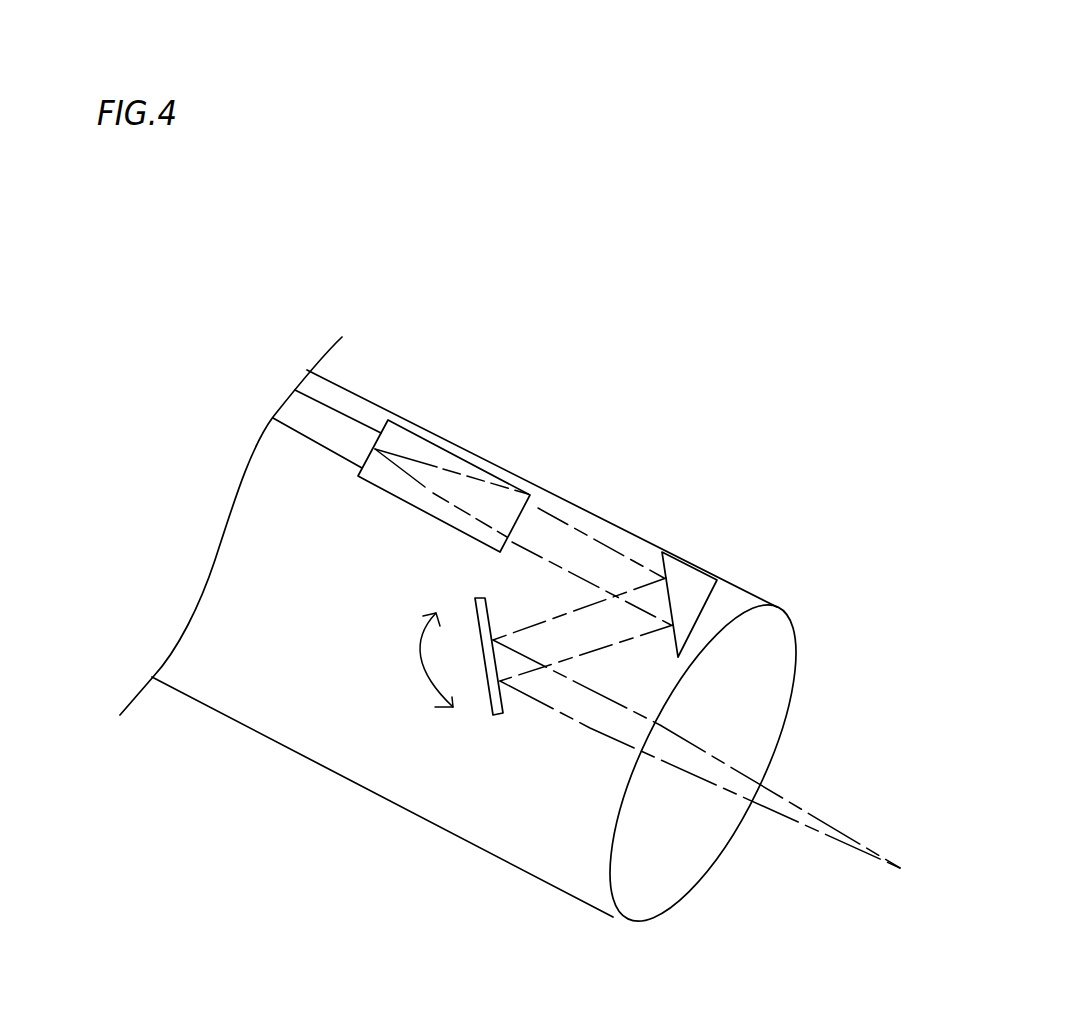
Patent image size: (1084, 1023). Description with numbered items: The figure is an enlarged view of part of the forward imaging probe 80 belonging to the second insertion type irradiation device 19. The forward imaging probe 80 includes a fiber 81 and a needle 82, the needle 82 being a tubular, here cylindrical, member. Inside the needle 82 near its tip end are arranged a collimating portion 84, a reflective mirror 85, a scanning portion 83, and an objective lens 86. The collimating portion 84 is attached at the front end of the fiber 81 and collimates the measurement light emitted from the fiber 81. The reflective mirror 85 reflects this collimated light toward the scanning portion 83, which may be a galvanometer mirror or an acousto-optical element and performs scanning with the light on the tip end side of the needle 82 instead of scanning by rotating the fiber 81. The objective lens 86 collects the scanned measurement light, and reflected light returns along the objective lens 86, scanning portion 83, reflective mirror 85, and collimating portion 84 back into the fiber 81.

The second insertion type irradiation device 19 is at (510, 228).
The forward imaging probe 80 is at (395, 802).
The fiber 81 is at (340, 432).
The needle 82 is at (252, 692).
The scanning portion 83 is at (493, 717).
The collimating portion 84 is at (445, 462).
The reflective mirror 85 is at (688, 587).
The objective lens 86 is at (772, 637).